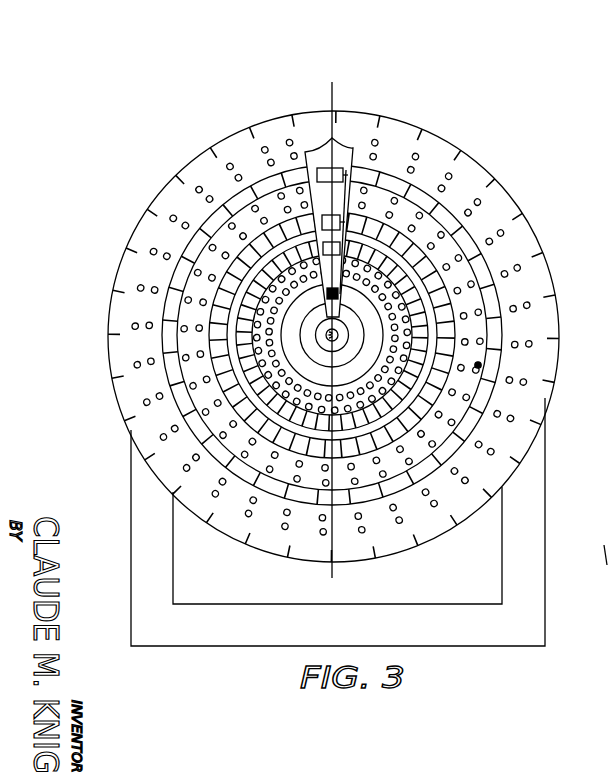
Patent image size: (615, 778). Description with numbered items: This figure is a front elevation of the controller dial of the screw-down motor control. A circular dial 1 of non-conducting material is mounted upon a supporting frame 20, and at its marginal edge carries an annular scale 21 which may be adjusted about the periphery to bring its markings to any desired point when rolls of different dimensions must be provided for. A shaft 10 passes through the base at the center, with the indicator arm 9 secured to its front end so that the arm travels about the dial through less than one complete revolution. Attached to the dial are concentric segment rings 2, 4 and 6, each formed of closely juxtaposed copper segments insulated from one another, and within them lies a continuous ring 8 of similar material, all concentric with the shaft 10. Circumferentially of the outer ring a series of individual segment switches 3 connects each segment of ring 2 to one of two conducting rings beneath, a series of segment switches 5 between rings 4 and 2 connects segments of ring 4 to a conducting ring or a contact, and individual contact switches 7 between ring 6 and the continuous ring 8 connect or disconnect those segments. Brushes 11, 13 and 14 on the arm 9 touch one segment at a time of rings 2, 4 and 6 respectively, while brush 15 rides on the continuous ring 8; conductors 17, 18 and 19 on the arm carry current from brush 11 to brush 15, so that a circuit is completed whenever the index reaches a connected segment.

The dial 1 is at (417, 153).
The segment ring 2 is at (412, 248).
The segment switches 3 is at (417, 193).
The segment ring 4 is at (410, 252).
The segment switches 5 is at (460, 232).
The segment ring 6 is at (533, 256).
The contact switches 7 is at (266, 264).
The continuous ring 8 is at (286, 308).
The indicator arm 9 is at (347, 142).
The shaft 10 is at (326, 336).
The brush 11 is at (317, 175).
The brush 13 is at (322, 222).
The brush 14 is at (323, 248).
The brush 15 is at (327, 292).
The conductor 17 is at (427, 218).
The conductor 18 is at (393, 228).
The conductor 19 is at (344, 283).
The supporting frame 20 is at (173, 573).
The scale 21 is at (548, 397).